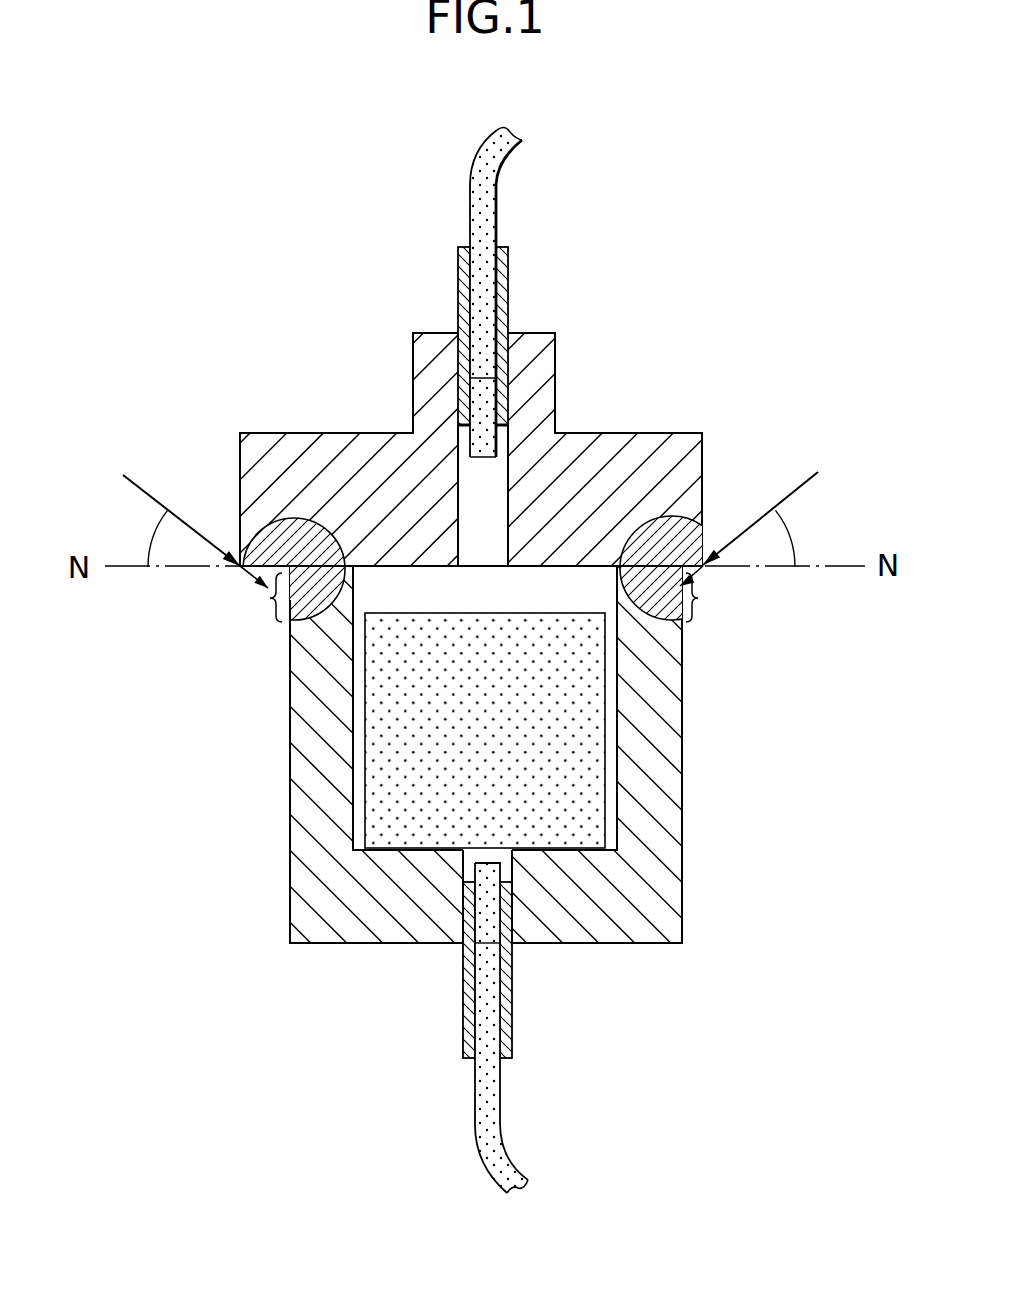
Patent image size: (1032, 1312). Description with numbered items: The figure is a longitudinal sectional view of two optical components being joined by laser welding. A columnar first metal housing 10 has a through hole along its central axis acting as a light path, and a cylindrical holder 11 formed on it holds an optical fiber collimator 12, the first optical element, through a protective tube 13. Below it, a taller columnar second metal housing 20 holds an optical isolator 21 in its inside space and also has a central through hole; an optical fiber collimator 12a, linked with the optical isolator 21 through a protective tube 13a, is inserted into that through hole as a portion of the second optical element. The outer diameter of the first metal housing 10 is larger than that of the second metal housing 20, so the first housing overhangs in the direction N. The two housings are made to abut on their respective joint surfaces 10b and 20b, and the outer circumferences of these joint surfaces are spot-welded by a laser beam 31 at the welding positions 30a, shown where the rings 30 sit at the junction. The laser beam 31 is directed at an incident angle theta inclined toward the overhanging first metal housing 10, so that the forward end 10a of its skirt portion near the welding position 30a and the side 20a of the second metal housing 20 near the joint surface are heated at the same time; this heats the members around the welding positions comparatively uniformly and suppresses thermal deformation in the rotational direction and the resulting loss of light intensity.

The first metal housing 10 is at (606, 437).
The forward end of skirt portion 10a is at (244, 569).
The joint surface 10b is at (376, 566).
The cylindrical holder 11 is at (527, 352).
The optical fiber collimator 12 is at (483, 186).
The optical fiber collimator 12a is at (490, 1097).
The protective tube 13 is at (508, 263).
The protective tube 13a is at (506, 983).
The second metal housing 20 is at (322, 932).
The side of second metal housing 20a is at (270, 598).
The joint surface 20b is at (290, 627).
The optical isolator 21 is at (382, 817).
The O-ring 30 is at (272, 524).
The welding position 30a is at (310, 575).
The laser beam 31 is at (140, 488).